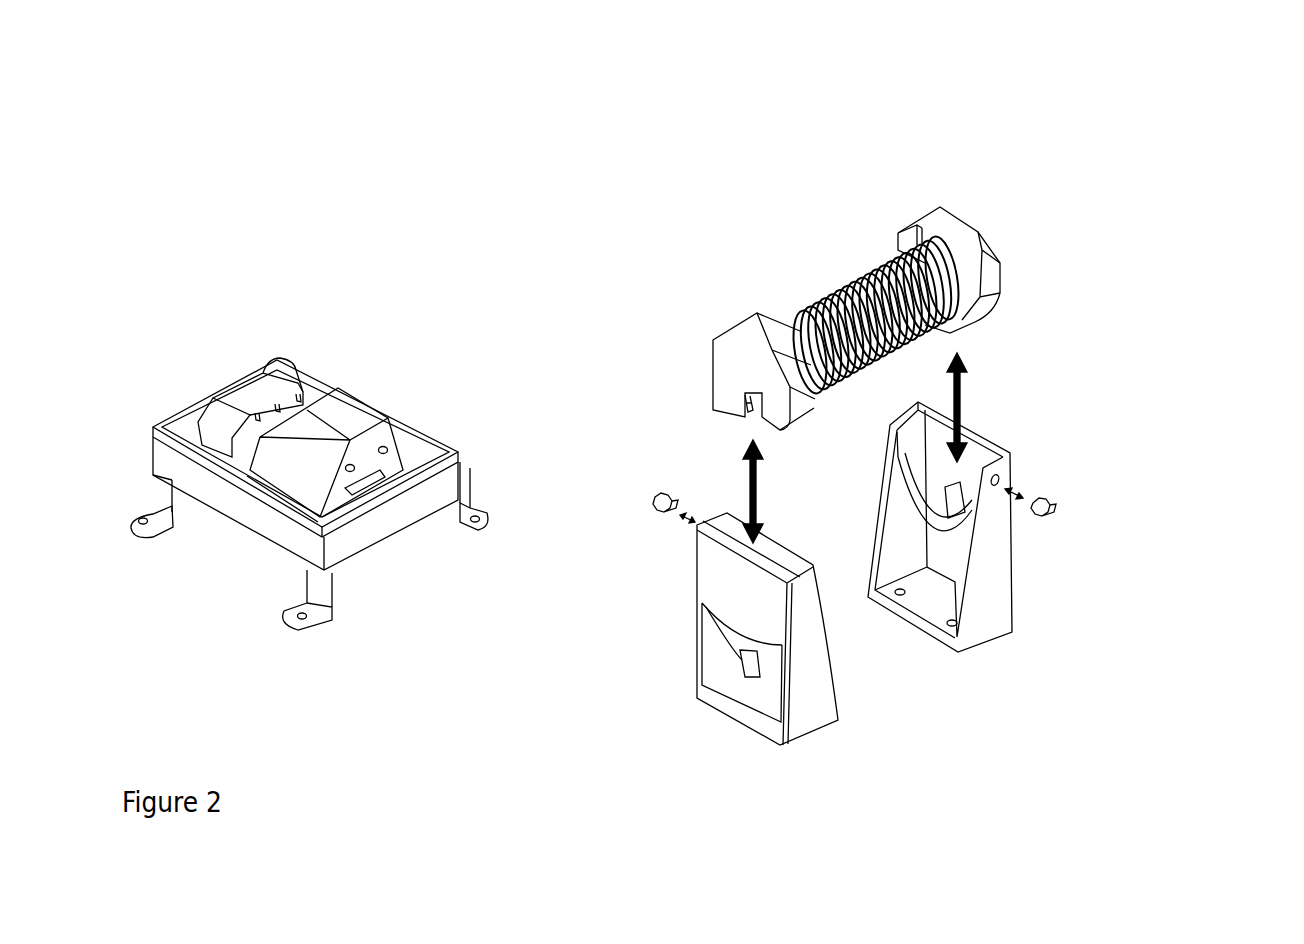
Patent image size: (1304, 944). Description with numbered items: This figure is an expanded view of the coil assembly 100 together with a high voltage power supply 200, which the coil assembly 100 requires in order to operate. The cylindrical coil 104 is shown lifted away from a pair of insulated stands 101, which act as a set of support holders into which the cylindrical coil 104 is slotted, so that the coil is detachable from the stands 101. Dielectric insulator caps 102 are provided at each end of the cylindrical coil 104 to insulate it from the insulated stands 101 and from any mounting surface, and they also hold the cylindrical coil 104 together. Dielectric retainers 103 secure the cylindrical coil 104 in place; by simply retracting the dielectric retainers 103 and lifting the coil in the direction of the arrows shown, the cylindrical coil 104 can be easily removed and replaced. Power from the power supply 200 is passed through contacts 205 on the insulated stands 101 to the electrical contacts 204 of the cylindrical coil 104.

The coil assembly 100 is at (1202, 176).
The insulated stands 101 is at (815, 713).
The dielectric insulator caps 102 is at (745, 357).
The dielectric retainers 103 is at (657, 512).
The cylindrical coil 104 is at (765, 237).
The high voltage power supply 200 is at (150, 246).
The electrical contacts of the cylindrical coil 204 is at (742, 405).
The contacts 205 is at (748, 663).